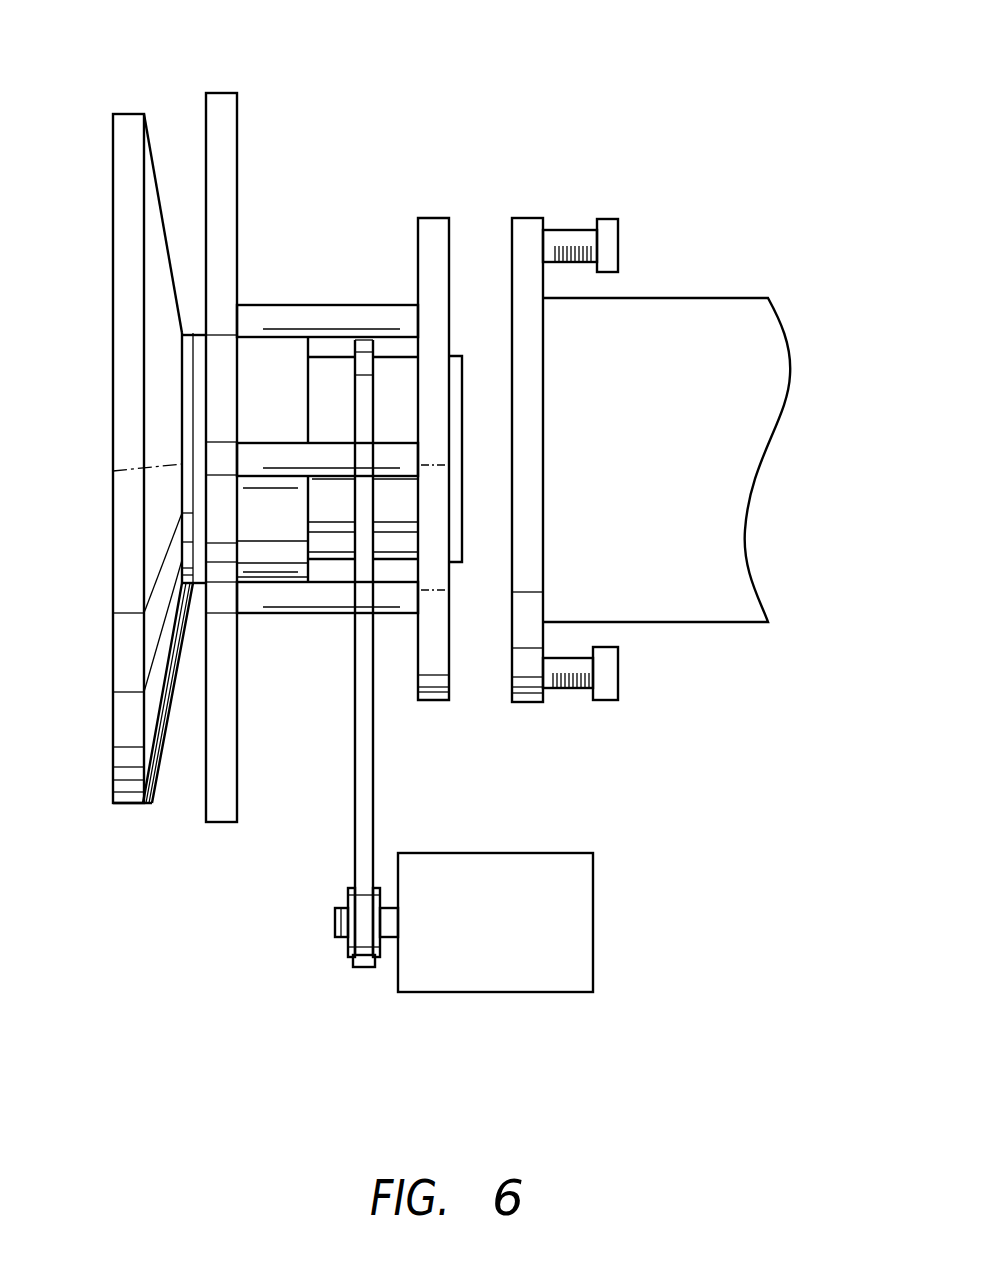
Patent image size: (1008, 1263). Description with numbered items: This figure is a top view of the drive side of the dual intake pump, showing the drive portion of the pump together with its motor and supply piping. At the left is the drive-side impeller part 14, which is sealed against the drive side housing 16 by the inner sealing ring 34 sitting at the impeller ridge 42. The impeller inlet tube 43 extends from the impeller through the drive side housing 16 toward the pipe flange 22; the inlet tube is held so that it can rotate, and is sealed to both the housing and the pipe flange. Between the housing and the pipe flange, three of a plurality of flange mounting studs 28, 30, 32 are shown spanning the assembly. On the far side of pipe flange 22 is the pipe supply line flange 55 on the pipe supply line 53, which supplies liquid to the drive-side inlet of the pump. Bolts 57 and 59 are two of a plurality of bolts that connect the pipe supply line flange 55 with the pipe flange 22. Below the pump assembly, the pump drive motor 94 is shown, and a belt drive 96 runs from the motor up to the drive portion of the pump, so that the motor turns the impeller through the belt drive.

The impeller part 14 is at (113, 190).
The drive side housing 16 is at (221, 100).
The pipe flange 22 is at (433, 218).
The flange mounting stud 28 is at (272, 613).
The flange mounting stud 30 is at (288, 443).
The flange mounting stud 32 is at (291, 305).
The inner sealing ring 34 is at (192, 590).
The impeller ridge 42 is at (190, 333).
The impeller inlet tube 43 is at (466, 410).
The pipe supply line 53 is at (758, 337).
The pipe supply line flange 55 is at (528, 218).
The bolt 57 is at (572, 688).
The bolt 59 is at (572, 230).
The pump drive motor 94 is at (593, 920).
The belt drive 96 is at (374, 757).